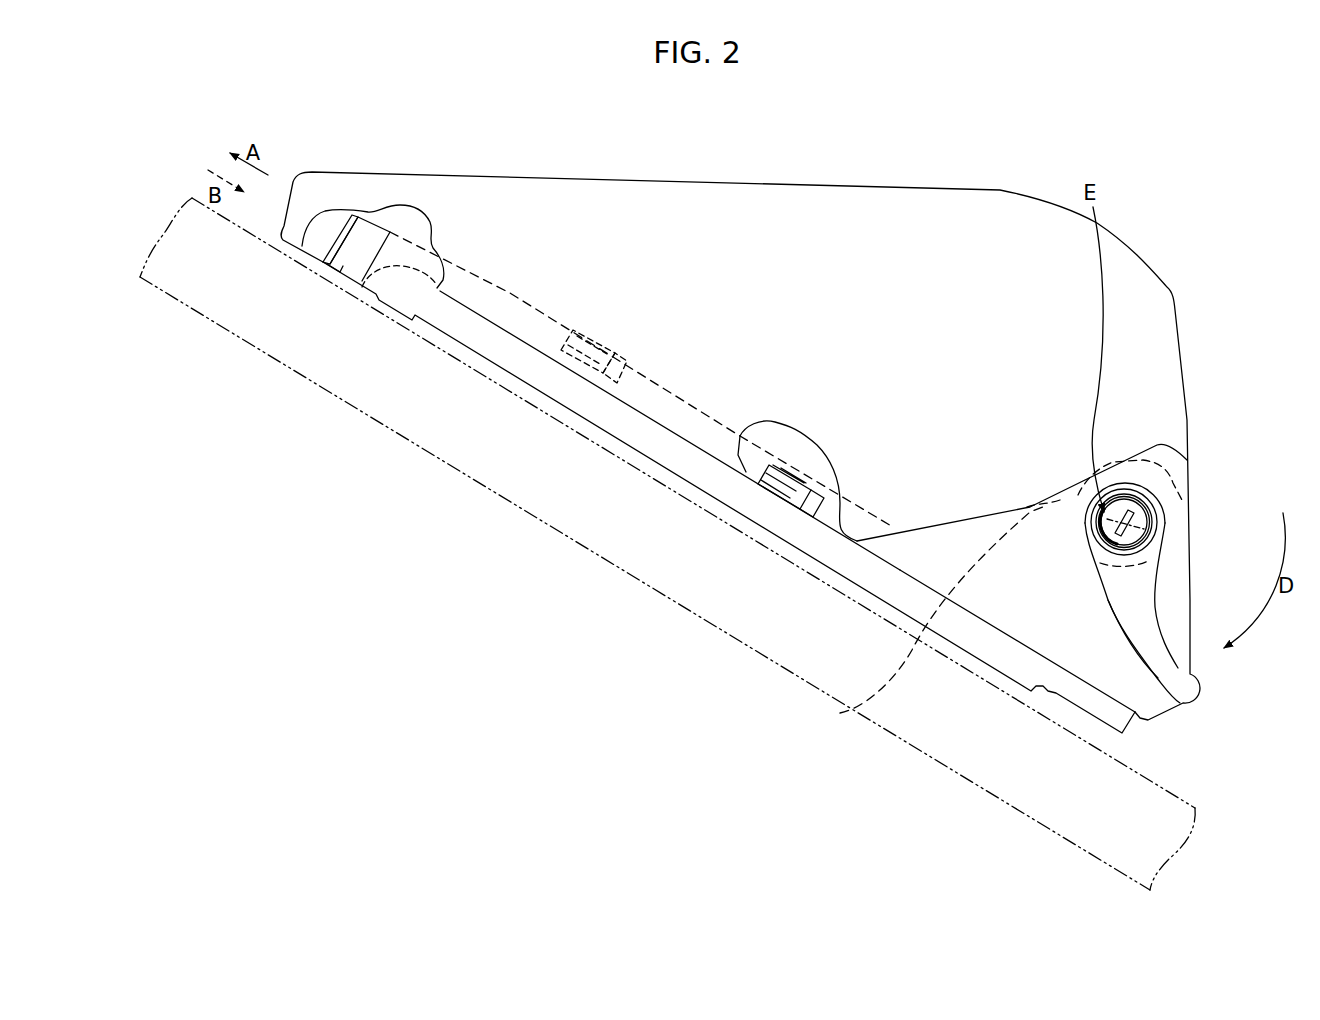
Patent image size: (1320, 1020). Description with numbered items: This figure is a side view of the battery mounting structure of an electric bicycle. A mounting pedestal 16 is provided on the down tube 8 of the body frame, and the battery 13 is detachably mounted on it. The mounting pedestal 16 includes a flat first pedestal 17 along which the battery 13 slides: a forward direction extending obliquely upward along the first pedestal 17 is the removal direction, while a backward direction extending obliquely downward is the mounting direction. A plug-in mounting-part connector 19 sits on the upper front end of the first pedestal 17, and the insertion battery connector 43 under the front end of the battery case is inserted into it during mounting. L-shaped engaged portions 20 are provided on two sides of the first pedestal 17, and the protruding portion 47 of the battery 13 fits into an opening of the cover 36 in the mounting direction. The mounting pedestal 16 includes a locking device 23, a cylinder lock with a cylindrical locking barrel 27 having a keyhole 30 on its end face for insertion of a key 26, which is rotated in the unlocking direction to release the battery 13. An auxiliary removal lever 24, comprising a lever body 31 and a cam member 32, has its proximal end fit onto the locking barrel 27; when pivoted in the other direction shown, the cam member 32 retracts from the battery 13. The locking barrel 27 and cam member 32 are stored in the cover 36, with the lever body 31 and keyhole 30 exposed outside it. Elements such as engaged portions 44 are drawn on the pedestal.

The down tube 8 is at (322, 385).
The battery 13 is at (764, 179).
The mounting pedestal 16 is at (478, 361).
The first pedestal 17 is at (617, 421).
The mounting-part connector 19 is at (393, 226).
The engaged portions 20 is at (612, 377).
The locking device 23 is at (1153, 547).
The auxiliary removal lever 24 is at (1159, 685).
The key 26 is at (1166, 488).
The locking barrel 27 is at (1140, 528).
The keyhole 30 is at (1123, 513).
The lever body 31 is at (1198, 684).
The cam member 32 is at (1197, 435).
The cover 36 is at (1023, 630).
The battery connector 43 is at (355, 216).
The bracket 44 is at (561, 352).
The protruding portion 47 is at (842, 713).